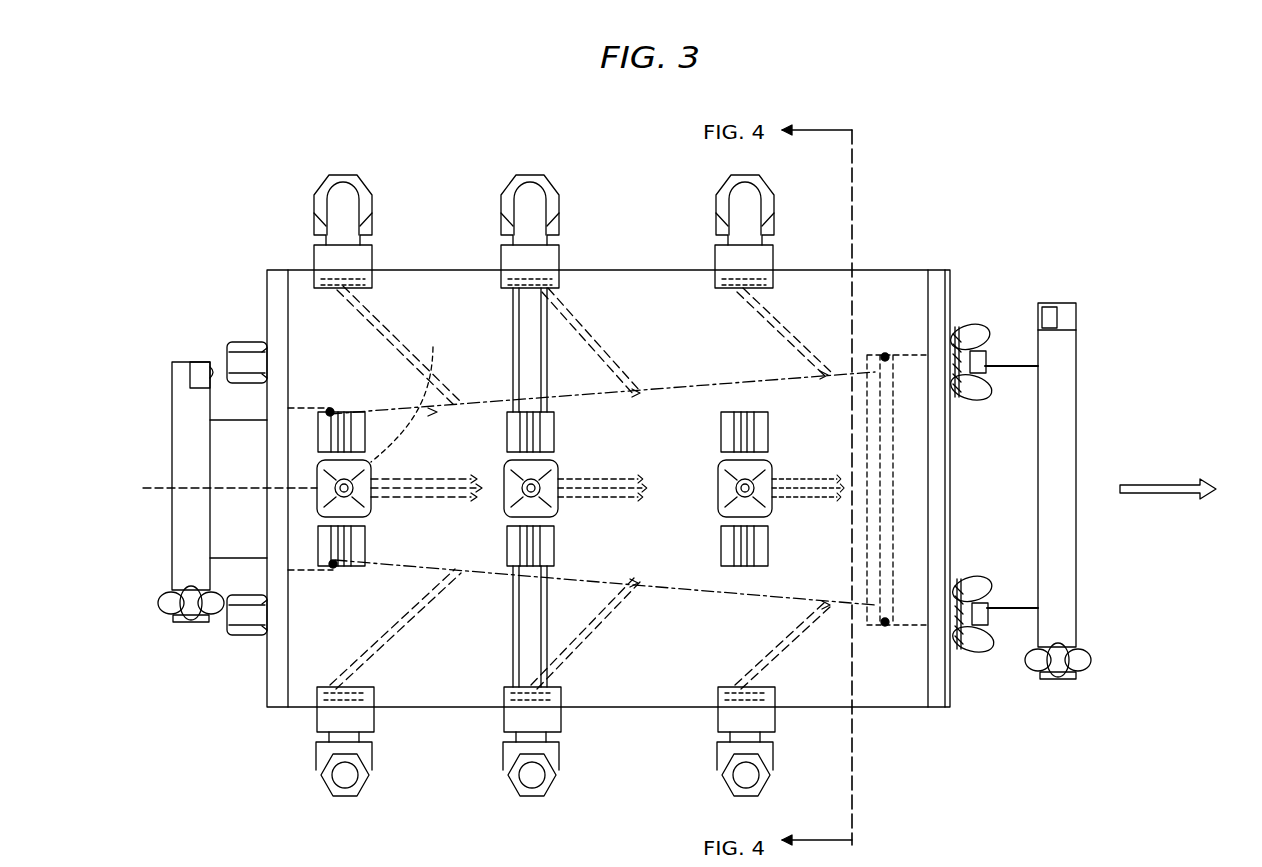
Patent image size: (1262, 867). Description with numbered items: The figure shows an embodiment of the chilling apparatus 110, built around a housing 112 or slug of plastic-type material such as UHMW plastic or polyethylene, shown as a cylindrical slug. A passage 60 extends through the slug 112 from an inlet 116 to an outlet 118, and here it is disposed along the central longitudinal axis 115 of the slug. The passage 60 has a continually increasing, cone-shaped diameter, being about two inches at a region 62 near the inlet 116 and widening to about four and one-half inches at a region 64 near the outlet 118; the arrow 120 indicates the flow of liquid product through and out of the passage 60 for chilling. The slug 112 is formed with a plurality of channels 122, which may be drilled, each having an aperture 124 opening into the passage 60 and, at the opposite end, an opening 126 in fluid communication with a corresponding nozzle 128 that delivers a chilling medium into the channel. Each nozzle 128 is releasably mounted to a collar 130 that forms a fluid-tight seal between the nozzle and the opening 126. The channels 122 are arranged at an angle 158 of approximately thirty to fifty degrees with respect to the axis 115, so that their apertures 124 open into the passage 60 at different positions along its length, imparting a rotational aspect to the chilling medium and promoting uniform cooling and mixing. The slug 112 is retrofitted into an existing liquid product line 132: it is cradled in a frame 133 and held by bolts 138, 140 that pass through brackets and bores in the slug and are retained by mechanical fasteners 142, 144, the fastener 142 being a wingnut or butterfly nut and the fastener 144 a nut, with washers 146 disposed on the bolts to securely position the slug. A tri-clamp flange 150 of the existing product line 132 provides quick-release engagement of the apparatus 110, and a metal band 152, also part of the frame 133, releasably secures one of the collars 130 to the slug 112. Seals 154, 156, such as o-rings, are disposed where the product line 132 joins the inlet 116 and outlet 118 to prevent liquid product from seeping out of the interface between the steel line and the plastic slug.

The passage 60 is at (708, 387).
The region near the inlet 62 is at (370, 410).
The region near the outlet 64 is at (882, 352).
The apparatus 110 is at (464, 180).
The housing 112 is at (413, 268).
The central longitudinal axis 115 is at (148, 487).
The inlet 116 is at (305, 407).
The outlet 118 is at (866, 630).
The arrow indicating flow 120 is at (1158, 500).
The channels 122 is at (580, 320).
The aperture 124 is at (645, 382).
The opening 126 is at (338, 293).
The nozzle 128 is at (552, 187).
The collar 130 is at (562, 252).
The existing liquid product line 132 is at (252, 474).
The frame 133 is at (965, 270).
The bolt 138 is at (1000, 345).
The bolt 140 is at (176, 362).
The mechanical fastener 142 is at (996, 395).
The mechanical fastener 144 is at (232, 345).
The washers 146 is at (266, 345).
The tri-clamp flange 150 is at (1065, 303).
The metal band 152 is at (512, 655).
The seal 154 is at (332, 410).
The seal 156 is at (886, 354).
The angle 158 is at (410, 390).